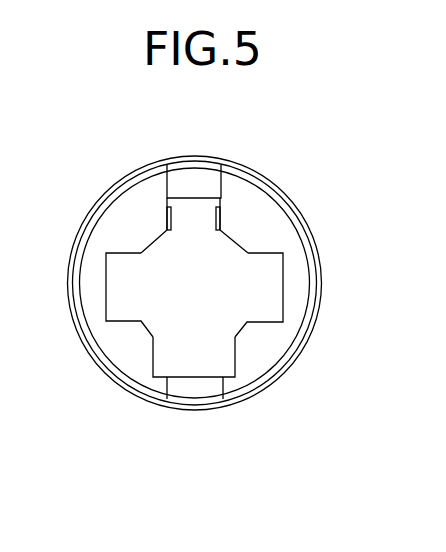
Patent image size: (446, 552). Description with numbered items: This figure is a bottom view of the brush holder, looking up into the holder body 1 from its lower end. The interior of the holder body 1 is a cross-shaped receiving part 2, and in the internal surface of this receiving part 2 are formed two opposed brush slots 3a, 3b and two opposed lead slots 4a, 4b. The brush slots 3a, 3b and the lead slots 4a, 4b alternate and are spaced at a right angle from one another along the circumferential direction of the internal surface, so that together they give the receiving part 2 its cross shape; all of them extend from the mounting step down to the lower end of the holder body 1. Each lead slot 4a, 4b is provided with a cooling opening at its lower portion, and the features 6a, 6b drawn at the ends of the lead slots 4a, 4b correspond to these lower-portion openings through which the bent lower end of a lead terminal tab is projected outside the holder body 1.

The holder body 1 is at (280, 382).
The cross-shaped receiving part 2 is at (224, 313).
The brush slot 3a is at (125, 287).
The brush slot 3b is at (262, 290).
The lead slot 4a is at (185, 216).
The lead slot 4b is at (198, 357).
The upper projection 6a is at (196, 188).
The lower projection 6b is at (197, 390).